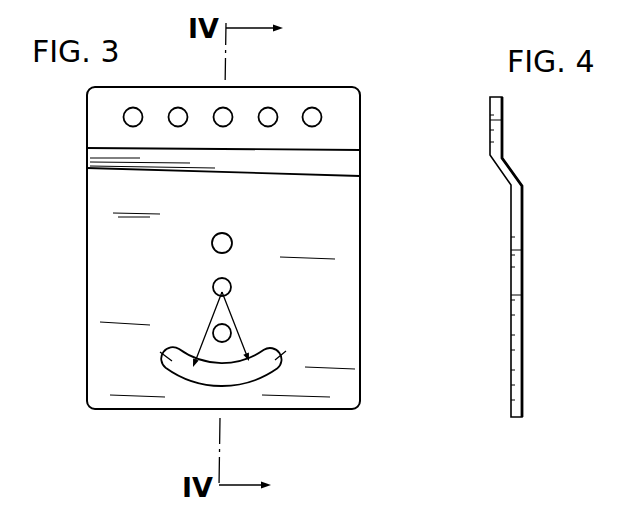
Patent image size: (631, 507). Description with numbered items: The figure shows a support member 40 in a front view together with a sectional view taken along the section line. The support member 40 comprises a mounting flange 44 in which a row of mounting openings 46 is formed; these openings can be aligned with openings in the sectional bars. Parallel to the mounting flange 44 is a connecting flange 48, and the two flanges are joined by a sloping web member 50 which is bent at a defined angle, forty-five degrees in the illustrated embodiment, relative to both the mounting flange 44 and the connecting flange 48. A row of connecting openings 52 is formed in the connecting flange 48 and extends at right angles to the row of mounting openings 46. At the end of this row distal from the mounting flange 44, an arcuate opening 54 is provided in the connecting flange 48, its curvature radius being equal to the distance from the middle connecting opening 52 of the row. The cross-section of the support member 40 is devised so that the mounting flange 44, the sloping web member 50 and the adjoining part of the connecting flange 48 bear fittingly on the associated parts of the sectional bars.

In FIG. 3, the support member 40 is at (70, 308).
In FIG. 4, the support member 40 is at (533, 353).
In FIG. 3, the mounting flange 44 is at (349, 115).
In FIG. 4, the mounting flange 44 is at (490, 96).
In FIG. 3, the mounting openings 46 is at (312, 113).
In FIG. 4, the mounting openings 46 is at (490, 125).
In FIG. 3, the connecting flange 48 is at (350, 262).
In FIG. 4, the connecting flange 48 is at (522, 207).
In FIG. 3, the sloping web member 50 is at (349, 162).
In FIG. 4, the sloping web member 50 is at (505, 162).
In FIG. 3, the connecting openings 52 is at (214, 282).
In FIG. 4, the connecting openings 52 is at (520, 292).
In FIG. 3, the arcuate opening 54 is at (238, 380).